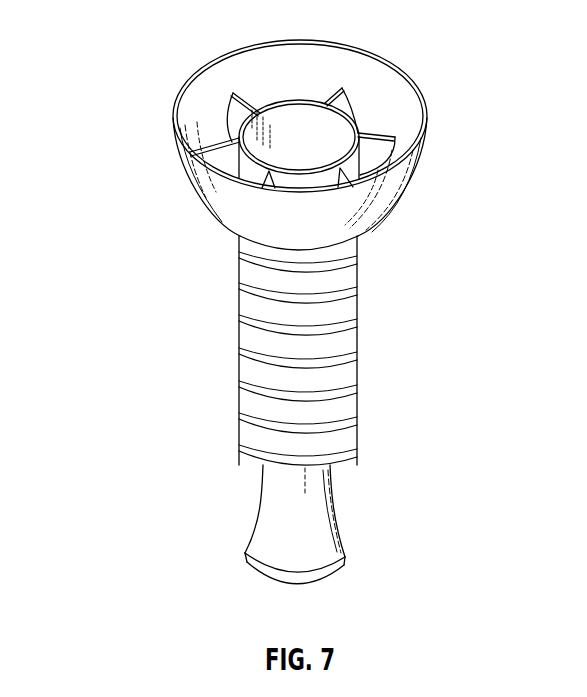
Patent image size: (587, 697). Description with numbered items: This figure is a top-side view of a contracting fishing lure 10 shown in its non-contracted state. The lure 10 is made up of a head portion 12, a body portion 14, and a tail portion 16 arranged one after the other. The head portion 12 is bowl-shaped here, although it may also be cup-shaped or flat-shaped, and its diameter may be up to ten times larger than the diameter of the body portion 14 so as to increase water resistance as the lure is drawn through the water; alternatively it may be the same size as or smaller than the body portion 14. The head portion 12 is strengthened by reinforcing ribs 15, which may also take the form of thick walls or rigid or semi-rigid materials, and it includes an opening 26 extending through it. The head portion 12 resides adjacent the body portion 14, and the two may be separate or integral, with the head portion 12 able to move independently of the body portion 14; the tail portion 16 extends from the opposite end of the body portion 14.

The contracting fishing lure 10 is at (116, 41).
The head portion 12 is at (450, 135).
The body portion 14 is at (387, 325).
The reinforcing ribs 15 is at (243, 108).
The tail portion 16 is at (353, 520).
The opening 26 is at (323, 120).